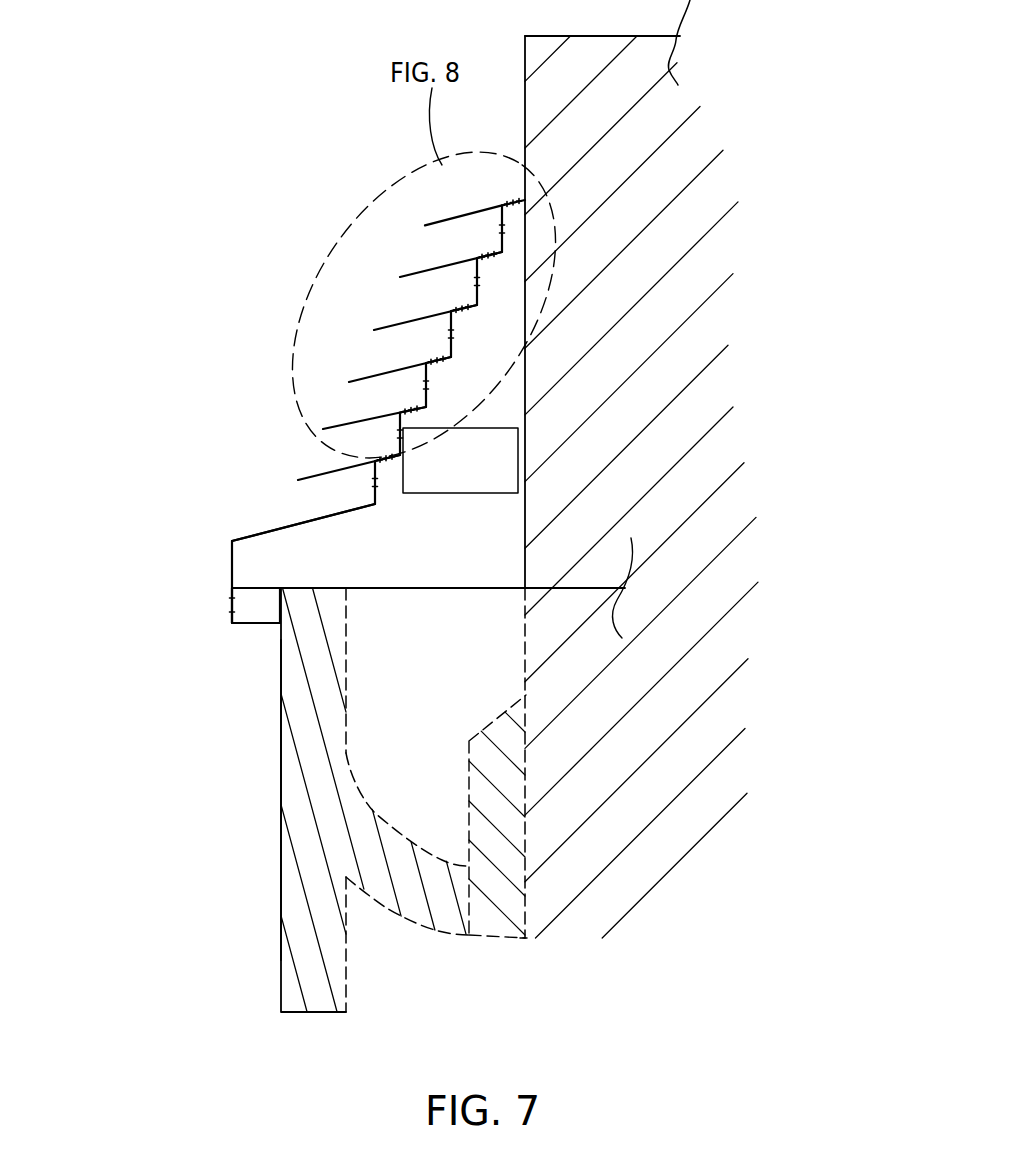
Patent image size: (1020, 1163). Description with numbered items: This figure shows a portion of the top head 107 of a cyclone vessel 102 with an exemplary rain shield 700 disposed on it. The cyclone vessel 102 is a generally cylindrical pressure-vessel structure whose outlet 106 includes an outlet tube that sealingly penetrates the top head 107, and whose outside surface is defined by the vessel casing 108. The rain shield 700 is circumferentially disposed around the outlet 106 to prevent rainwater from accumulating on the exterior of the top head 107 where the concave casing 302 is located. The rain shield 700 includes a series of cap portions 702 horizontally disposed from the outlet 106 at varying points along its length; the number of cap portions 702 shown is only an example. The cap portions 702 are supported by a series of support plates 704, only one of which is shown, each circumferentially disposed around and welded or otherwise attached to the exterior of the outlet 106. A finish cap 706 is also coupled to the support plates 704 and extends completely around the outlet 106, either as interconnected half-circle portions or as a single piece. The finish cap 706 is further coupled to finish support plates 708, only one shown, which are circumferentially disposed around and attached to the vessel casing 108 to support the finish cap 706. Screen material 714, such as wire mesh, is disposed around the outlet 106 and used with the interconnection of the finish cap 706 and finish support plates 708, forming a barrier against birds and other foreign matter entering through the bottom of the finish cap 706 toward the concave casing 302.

The rain shield 700 is at (127, 337).
The cap portions 702 is at (430, 221).
The support plate 704 is at (497, 461).
The finish cap 706 is at (282, 520).
The finish support plates 708 is at (258, 610).
The screen material 714 is at (258, 588).
The outlet 106 is at (672, 153).
The top head 107 is at (526, 997).
The cyclone vessel 102 is at (280, 712).
The vessel casing 108 is at (305, 884).
The concave casing 302 is at (387, 853).